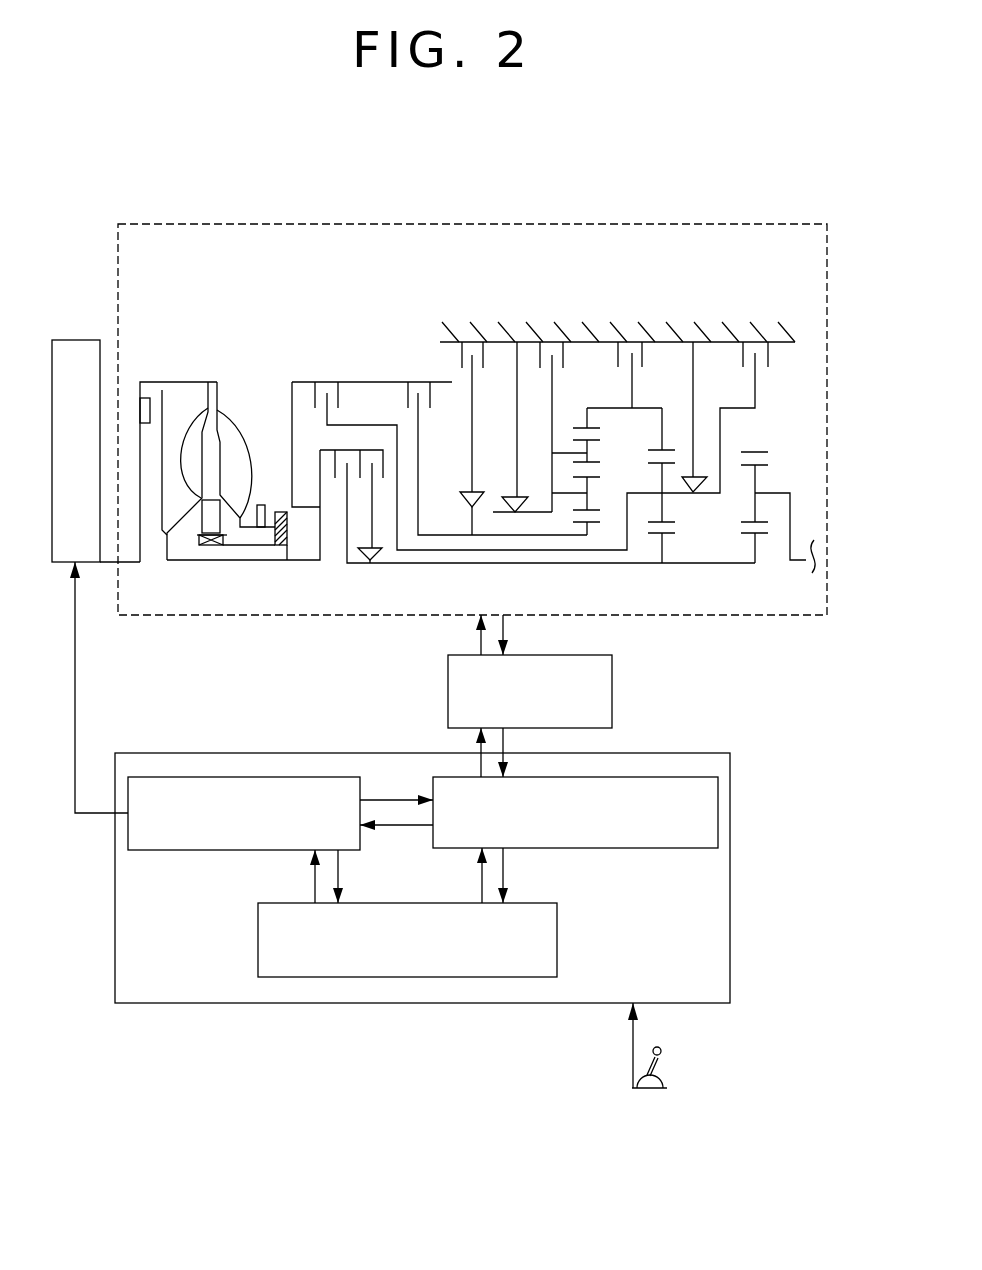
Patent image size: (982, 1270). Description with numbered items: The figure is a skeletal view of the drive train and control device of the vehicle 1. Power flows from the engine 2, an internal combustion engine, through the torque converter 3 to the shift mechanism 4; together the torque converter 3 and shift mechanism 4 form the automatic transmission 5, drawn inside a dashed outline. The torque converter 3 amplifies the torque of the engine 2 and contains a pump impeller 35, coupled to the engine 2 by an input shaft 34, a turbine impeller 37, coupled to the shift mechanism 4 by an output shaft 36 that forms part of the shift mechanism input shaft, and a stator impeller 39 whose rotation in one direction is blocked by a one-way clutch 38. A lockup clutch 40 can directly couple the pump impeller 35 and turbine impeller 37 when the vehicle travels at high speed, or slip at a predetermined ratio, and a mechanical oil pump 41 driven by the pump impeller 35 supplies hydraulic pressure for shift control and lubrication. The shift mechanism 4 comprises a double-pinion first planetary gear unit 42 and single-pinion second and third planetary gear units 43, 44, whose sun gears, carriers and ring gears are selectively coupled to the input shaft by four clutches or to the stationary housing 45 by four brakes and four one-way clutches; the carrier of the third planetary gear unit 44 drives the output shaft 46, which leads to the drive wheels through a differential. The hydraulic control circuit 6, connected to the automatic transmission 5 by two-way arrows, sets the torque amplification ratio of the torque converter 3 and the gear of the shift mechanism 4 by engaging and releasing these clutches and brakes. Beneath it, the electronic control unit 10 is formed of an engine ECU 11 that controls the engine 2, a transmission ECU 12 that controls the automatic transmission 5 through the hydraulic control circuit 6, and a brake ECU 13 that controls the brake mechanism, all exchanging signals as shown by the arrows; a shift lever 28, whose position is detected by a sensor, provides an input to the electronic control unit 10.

The vehicle 1 is at (730, 208).
The engine 2 is at (82, 338).
The torque converter 3 is at (211, 456).
The shift mechanism 4 is at (670, 273).
The automatic transmission 5 is at (428, 200).
The hydraulic control circuit 6 is at (615, 690).
The electronic control unit 10 is at (429, 782).
The engine ECU 11 is at (183, 852).
The transmission ECU 12 is at (718, 822).
The brake ECU 13 is at (557, 936).
The shift lever 28 is at (661, 1050).
The input shaft 34 is at (128, 563).
The pump impeller 35 is at (236, 414).
The output shaft 36 is at (246, 562).
The turbine impeller 37 is at (192, 405).
The one-way clutch 38 is at (212, 547).
The stator impeller 39 is at (202, 512).
The lockup clutch 40 is at (147, 398).
The oil pump 41 is at (259, 503).
The first planetary gear unit 42 is at (569, 555).
The second planetary gear unit 43 is at (661, 585).
The third planetary gear unit 44 is at (749, 585).
The housing 45 is at (283, 548).
The output shaft 46 is at (802, 562).